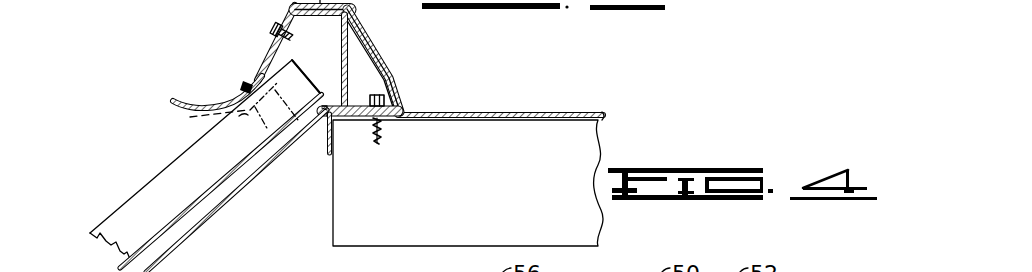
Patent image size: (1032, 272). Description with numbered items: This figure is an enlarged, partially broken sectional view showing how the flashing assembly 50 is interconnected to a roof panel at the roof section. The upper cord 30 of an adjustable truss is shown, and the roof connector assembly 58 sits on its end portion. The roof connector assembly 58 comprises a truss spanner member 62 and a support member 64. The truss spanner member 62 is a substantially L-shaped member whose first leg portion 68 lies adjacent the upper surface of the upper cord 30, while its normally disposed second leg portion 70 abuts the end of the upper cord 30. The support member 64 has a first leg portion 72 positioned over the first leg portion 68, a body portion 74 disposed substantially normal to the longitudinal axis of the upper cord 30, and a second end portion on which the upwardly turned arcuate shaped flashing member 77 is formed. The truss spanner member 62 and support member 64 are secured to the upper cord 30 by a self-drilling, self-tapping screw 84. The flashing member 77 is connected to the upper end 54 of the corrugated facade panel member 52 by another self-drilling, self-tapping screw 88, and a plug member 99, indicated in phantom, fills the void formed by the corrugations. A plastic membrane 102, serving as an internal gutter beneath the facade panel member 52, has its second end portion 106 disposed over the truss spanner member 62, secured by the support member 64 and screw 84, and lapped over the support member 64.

The upper cord 30 is at (509, 210).
The flashing assembly 50 is at (150, 171).
The facade panel member 52 is at (171, 162).
The upper end 54 is at (296, 100).
The roof connector assembly 58 is at (256, 48).
The truss spanner member 62 is at (340, 135).
The support member 64 is at (348, 88).
The first leg portion 68 is at (395, 113).
The second leg portion 70 is at (328, 147).
The first leg portion 72 is at (385, 98).
The body portion 74 is at (380, 78).
The flashing member 77 is at (213, 104).
The self-drilling, self-tapping screw 84 is at (398, 88).
The self-drilling, self-tapping screw 88 is at (248, 82).
The plug member 99 is at (229, 106).
The plastic membrane 102 is at (203, 222).
The second end portion 106 is at (360, 62).